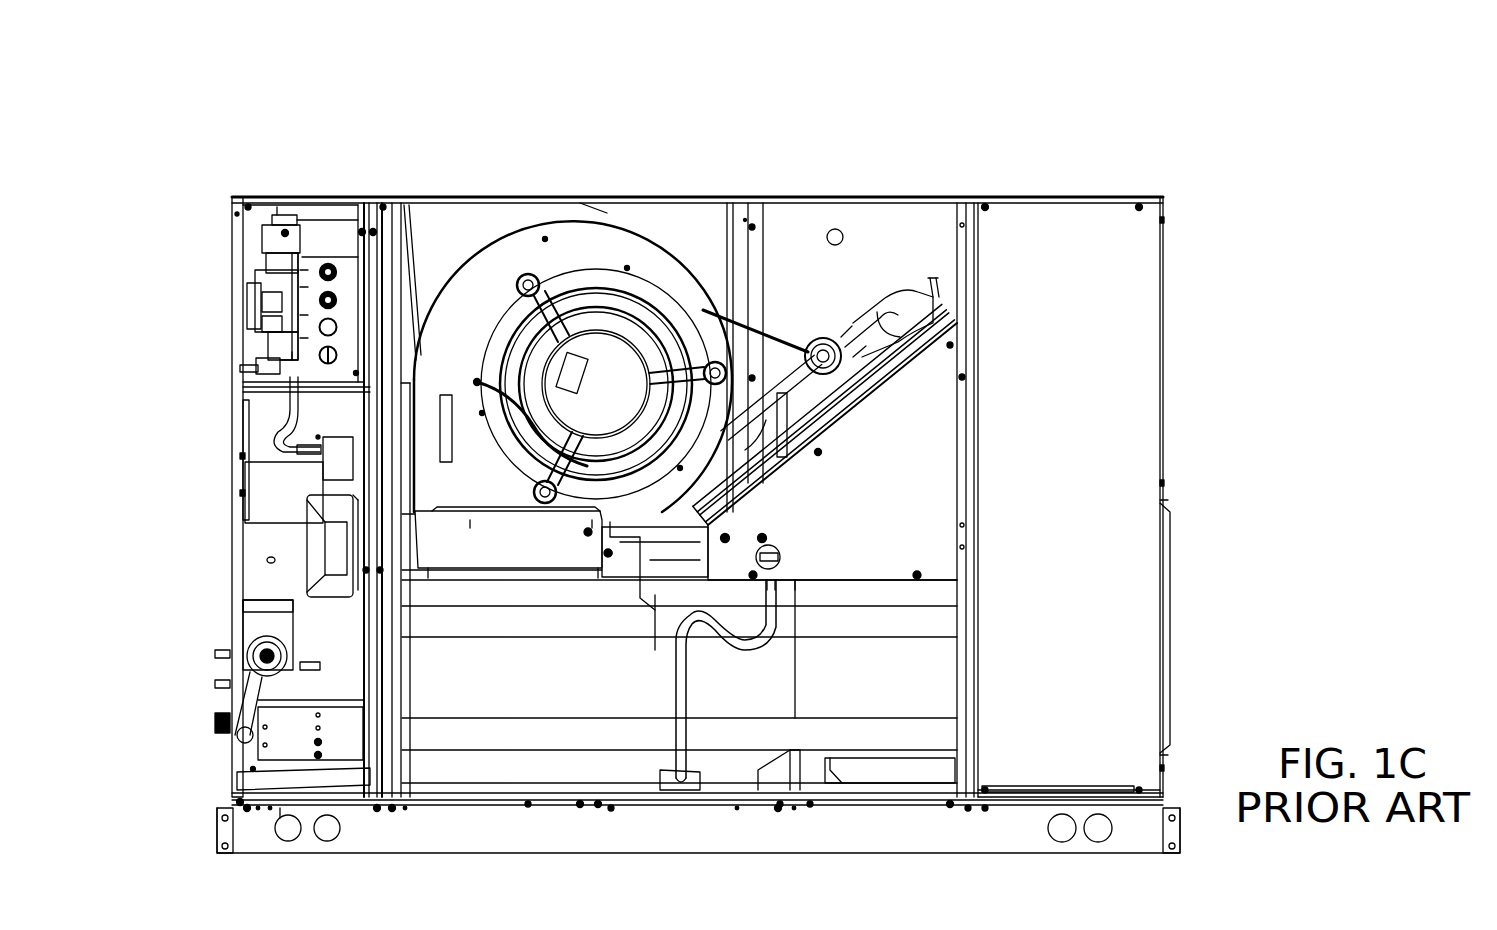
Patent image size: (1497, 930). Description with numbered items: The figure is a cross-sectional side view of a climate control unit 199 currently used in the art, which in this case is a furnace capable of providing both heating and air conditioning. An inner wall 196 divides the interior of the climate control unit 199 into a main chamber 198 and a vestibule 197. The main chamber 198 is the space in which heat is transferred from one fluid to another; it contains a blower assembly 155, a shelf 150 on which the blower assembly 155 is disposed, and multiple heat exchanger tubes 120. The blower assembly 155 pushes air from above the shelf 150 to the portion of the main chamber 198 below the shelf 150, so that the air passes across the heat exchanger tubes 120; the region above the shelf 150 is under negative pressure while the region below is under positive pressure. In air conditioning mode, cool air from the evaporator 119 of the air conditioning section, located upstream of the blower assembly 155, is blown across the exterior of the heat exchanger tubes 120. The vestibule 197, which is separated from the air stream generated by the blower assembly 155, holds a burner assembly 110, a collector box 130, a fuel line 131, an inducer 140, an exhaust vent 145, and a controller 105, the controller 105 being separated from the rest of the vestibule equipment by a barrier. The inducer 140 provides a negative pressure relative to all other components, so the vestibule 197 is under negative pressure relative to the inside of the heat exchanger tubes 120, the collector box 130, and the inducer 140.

The vestibule 197 is at (292, 160).
The inner wall 196 is at (388, 233).
The controller 105 is at (215, 301).
The blower assembly 155 is at (680, 203).
The main chamber 198 is at (793, 218).
The climate control unit 199 is at (1226, 104).
The evaporator 119 is at (893, 416).
The collector box 130 is at (325, 410).
The inducer 140 is at (200, 468).
The exhaust vent 145 is at (287, 540).
The fuel line 131 is at (247, 750).
The burner assembly 110 is at (163, 771).
The shelf 150 is at (465, 592).
The heat exchanger tubes 120 is at (738, 772).